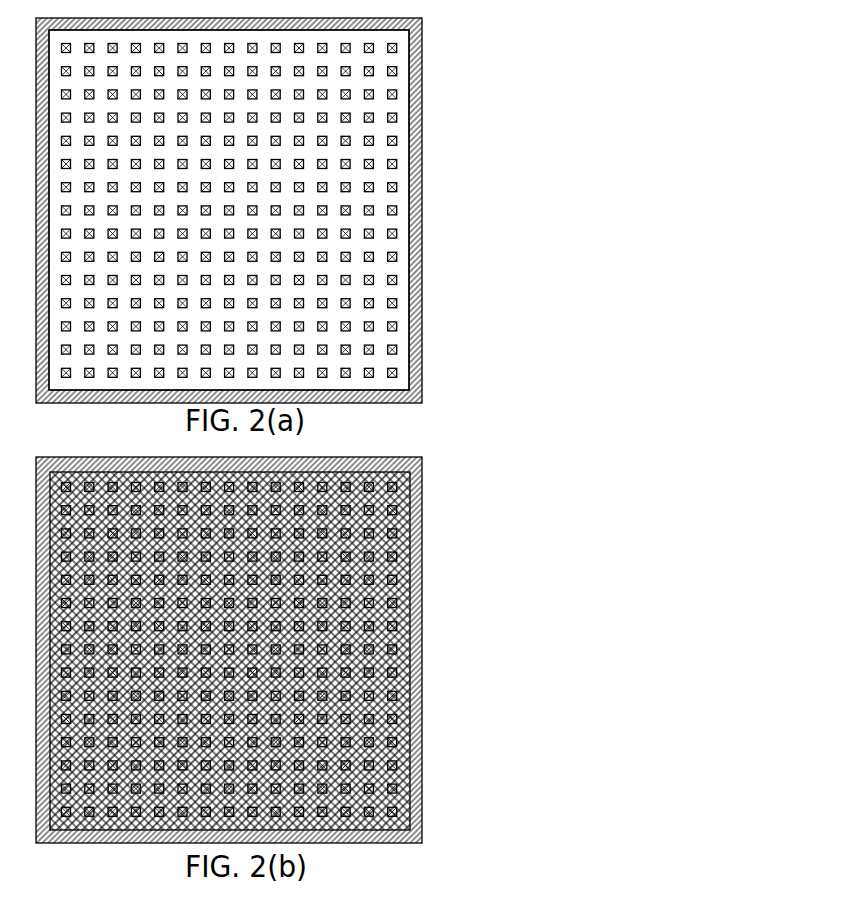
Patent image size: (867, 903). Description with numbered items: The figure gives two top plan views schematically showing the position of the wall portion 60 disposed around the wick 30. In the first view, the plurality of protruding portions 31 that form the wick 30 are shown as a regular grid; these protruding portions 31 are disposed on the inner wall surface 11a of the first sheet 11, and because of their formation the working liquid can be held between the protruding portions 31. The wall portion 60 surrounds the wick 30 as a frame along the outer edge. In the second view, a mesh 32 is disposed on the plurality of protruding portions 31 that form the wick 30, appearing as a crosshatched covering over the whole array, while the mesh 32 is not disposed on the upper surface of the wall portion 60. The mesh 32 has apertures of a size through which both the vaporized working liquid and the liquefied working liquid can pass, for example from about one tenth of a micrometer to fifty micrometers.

In FIG. 2A, the wall portion 60 is at (422, 100).
In FIG. 2B, the wall portion 60 is at (422, 542).
In FIG. 2A, the first sheet 11 is at (298, 210).
In FIG. 2A, the inner wall surface 11a is at (380, 222).
In FIG. 2A, the wick 30 is at (298, 211).
In FIG. 2B, the wick 30 is at (292, 651).
In FIG. 2A, the protruding portions 31 is at (373, 164).
In FIG. 2B, the protruding portions 31 is at (395, 607).
In FIG. 2B, the mesh 32 is at (395, 663).